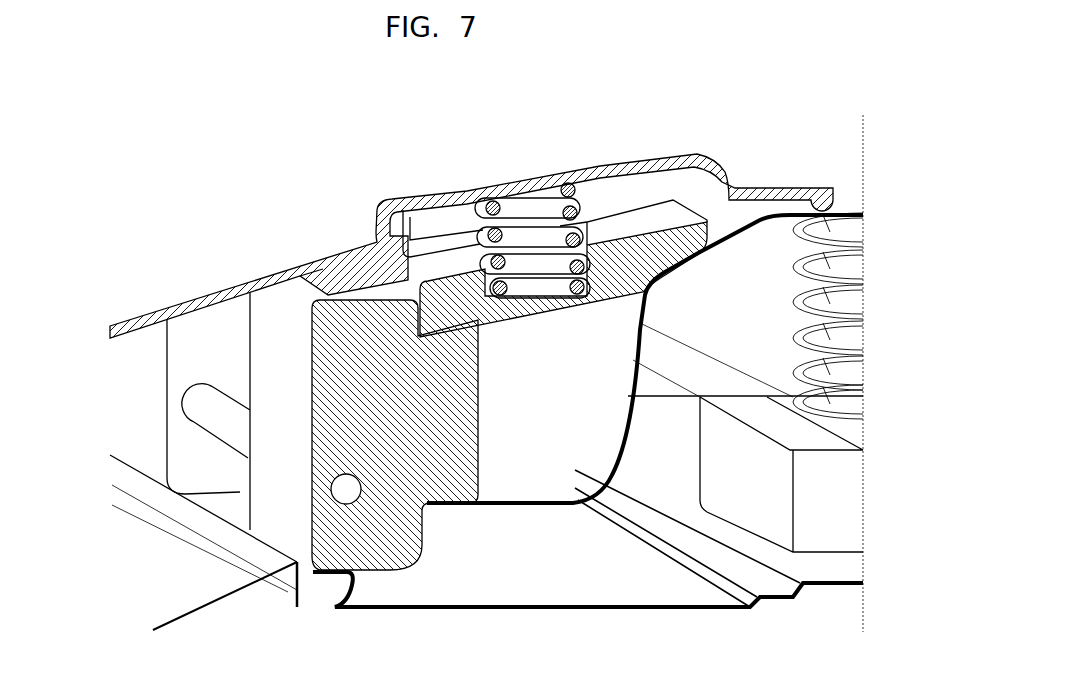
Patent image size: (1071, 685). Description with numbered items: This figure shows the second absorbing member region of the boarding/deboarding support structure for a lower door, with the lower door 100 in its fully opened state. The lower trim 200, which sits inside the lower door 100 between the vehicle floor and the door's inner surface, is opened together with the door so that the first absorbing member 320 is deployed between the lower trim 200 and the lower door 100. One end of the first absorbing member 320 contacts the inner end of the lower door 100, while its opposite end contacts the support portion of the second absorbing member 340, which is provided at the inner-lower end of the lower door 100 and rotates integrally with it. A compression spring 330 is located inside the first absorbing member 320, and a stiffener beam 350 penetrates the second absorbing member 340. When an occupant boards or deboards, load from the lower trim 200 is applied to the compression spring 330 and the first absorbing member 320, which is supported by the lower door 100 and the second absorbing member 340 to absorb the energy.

The lower door 100 is at (750, 228).
The lower trim 200 is at (193, 262).
The first absorbing member 320 is at (637, 242).
The compression spring 330 is at (522, 205).
The second absorbing member 340 is at (328, 460).
The stiffener beam 350 is at (207, 418).